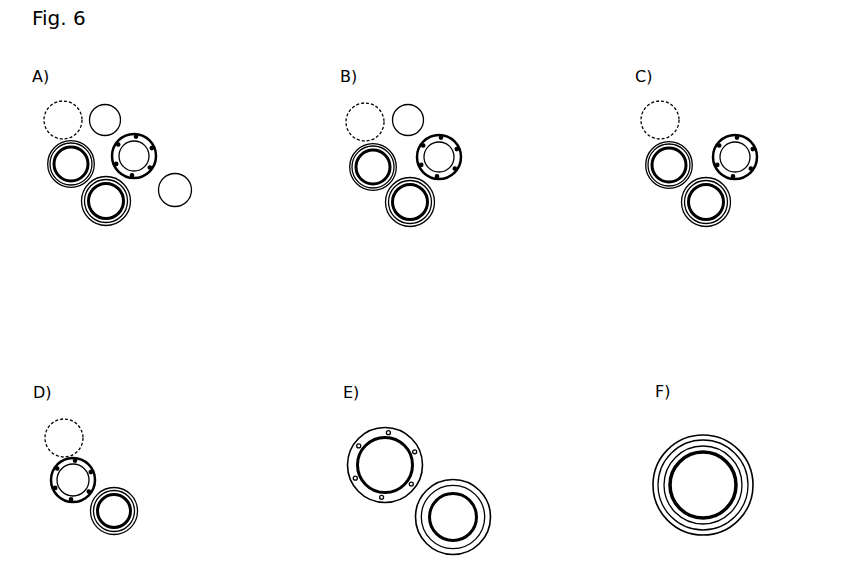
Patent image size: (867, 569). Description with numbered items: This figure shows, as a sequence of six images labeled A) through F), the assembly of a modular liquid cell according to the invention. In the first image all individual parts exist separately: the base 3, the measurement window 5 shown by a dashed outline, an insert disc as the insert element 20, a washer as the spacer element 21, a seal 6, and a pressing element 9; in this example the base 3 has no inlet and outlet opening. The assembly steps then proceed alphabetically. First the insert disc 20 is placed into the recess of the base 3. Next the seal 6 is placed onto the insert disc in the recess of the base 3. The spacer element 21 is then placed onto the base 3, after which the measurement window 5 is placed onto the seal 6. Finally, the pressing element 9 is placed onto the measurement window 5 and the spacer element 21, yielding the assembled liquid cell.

The base 3 is at (66, 172).
The measurement window 5 is at (58, 128).
The seal 6 is at (100, 128).
The pressing element 9 is at (101, 209).
The insert element 20 is at (166, 198).
The spacer element 21 is at (125, 164).